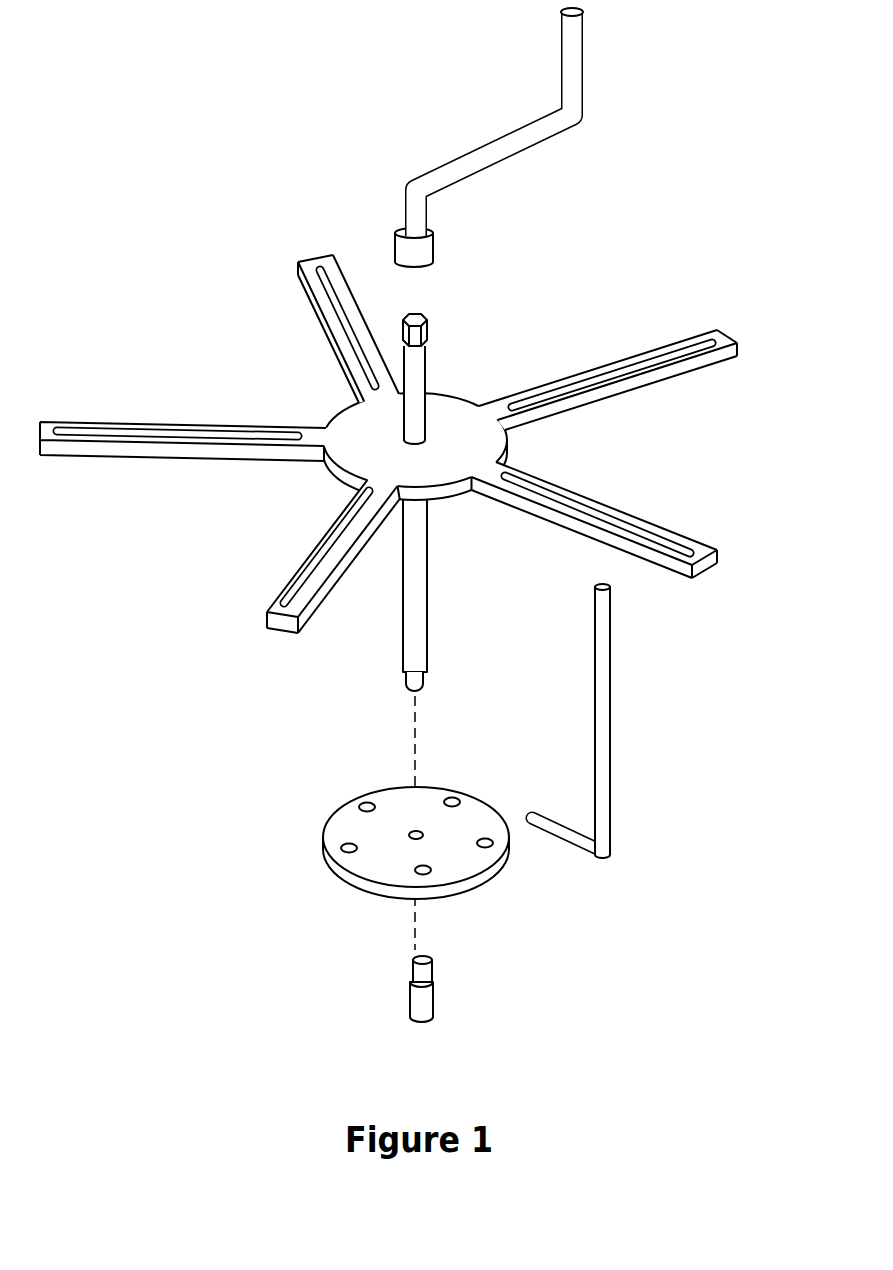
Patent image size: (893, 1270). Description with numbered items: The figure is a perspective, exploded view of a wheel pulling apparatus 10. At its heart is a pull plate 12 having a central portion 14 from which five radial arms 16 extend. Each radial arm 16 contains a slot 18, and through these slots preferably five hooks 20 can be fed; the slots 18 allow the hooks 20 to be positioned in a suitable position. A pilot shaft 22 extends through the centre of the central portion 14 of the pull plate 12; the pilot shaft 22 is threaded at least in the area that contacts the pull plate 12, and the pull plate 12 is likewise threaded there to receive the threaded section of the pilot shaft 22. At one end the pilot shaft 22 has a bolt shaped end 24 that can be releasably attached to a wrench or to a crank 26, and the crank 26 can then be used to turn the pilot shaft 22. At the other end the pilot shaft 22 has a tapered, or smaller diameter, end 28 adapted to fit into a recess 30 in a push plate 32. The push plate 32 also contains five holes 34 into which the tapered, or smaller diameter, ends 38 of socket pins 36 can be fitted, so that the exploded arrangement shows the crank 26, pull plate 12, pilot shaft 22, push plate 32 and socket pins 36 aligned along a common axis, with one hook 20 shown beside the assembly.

The wheel pulling apparatus 10 is at (180, 253).
The pull plate 12 is at (422, 422).
The central portion 14 is at (473, 446).
The radial arms 16 is at (300, 285).
The slot 18 is at (348, 320).
The hooks 20 is at (607, 803).
The pilot shaft 22 is at (420, 536).
The bolt shaped end 24 is at (430, 333).
The crank 26 is at (533, 150).
The tapered or smaller diameter end 28 is at (424, 678).
The recess 30 is at (413, 838).
The push plate 32 is at (412, 836).
The holes 34 is at (365, 805).
The socket pins 36 is at (428, 1005).
The tapered or smaller diameter ends 38 is at (428, 970).